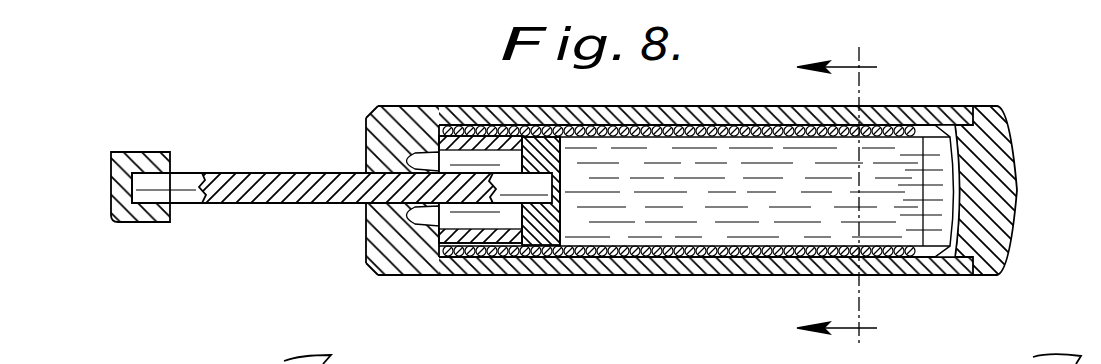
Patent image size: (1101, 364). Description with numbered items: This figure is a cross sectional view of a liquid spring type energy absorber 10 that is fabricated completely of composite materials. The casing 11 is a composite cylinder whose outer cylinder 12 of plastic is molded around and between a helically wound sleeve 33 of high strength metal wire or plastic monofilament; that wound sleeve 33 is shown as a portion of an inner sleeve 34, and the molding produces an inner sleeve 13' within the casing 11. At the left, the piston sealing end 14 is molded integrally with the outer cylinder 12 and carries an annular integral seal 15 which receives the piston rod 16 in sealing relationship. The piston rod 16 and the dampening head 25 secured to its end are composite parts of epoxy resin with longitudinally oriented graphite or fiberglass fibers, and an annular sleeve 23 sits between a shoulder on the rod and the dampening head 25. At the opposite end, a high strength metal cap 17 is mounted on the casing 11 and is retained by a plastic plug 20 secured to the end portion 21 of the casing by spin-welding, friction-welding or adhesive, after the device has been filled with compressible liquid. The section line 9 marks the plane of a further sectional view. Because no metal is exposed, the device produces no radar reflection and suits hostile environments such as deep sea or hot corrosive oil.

The section line 9- 9 is at (843, 199).
The energy absorber 10 is at (350, 105).
The casing 11 is at (731, 90).
The outer cylinder 12 is at (678, 90).
The inner sleeve 13' is at (751, 191).
The piston sealing end 14 is at (385, 222).
The annular integral seal 15 is at (397, 276).
The piston rod 16 is at (188, 177).
The metal cap 17 is at (960, 220).
The plastic plug 20 is at (1005, 135).
The end portion 21 is at (947, 262).
The annular sleeve 23 is at (470, 122).
The dampening head 25 is at (524, 277).
The sleeve 33 is at (793, 203).
The inner sleeve 34 is at (686, 276).